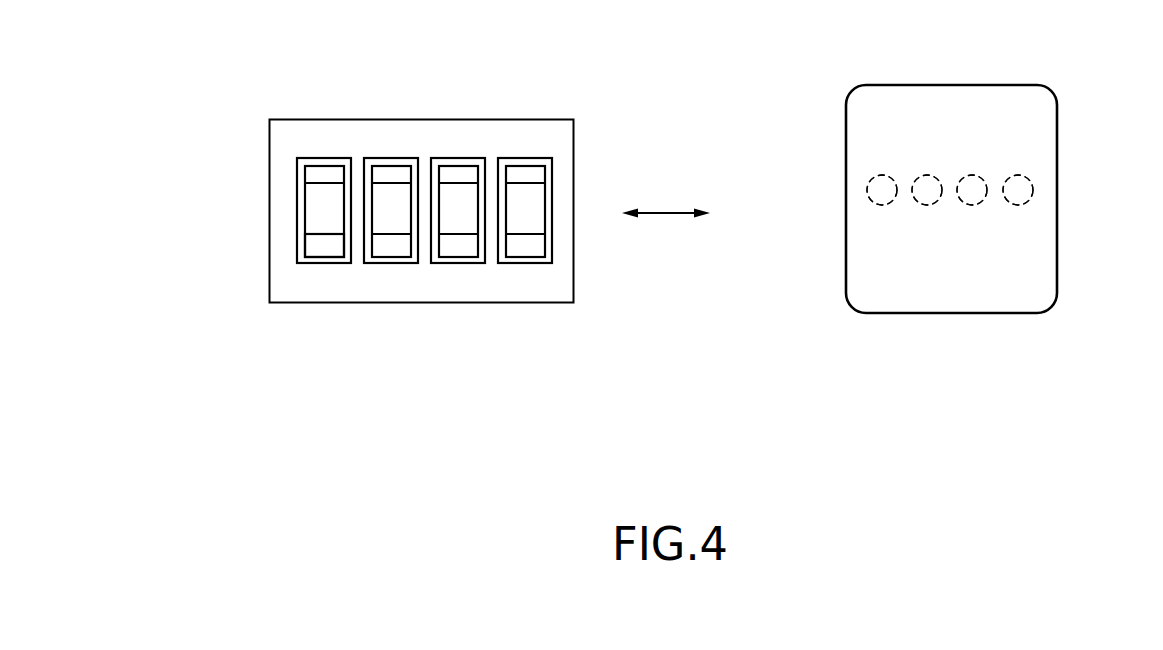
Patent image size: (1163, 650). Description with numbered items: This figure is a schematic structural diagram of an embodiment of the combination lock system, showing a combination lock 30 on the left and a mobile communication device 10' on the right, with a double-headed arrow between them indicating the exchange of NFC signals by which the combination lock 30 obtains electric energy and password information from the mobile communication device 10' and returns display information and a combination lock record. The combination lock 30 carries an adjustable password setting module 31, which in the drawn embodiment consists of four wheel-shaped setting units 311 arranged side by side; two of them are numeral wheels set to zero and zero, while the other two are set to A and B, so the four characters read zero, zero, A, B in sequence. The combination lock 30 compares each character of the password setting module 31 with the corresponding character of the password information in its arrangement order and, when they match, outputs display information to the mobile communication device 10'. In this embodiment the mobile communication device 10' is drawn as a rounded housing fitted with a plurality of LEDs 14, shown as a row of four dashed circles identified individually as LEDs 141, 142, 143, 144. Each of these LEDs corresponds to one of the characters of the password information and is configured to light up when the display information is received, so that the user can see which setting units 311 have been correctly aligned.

The combination lock 30 is at (514, 119).
The password setting module 31 is at (405, 153).
The wheel-shaped setting unit 311 is at (315, 243).
The mobile communication device 10' is at (951, 156).
The LEDs 14 is at (962, 164).
The LED 141 is at (880, 193).
The LED 142 is at (927, 200).
The LED 143 is at (975, 200).
The LED 144 is at (1020, 192).